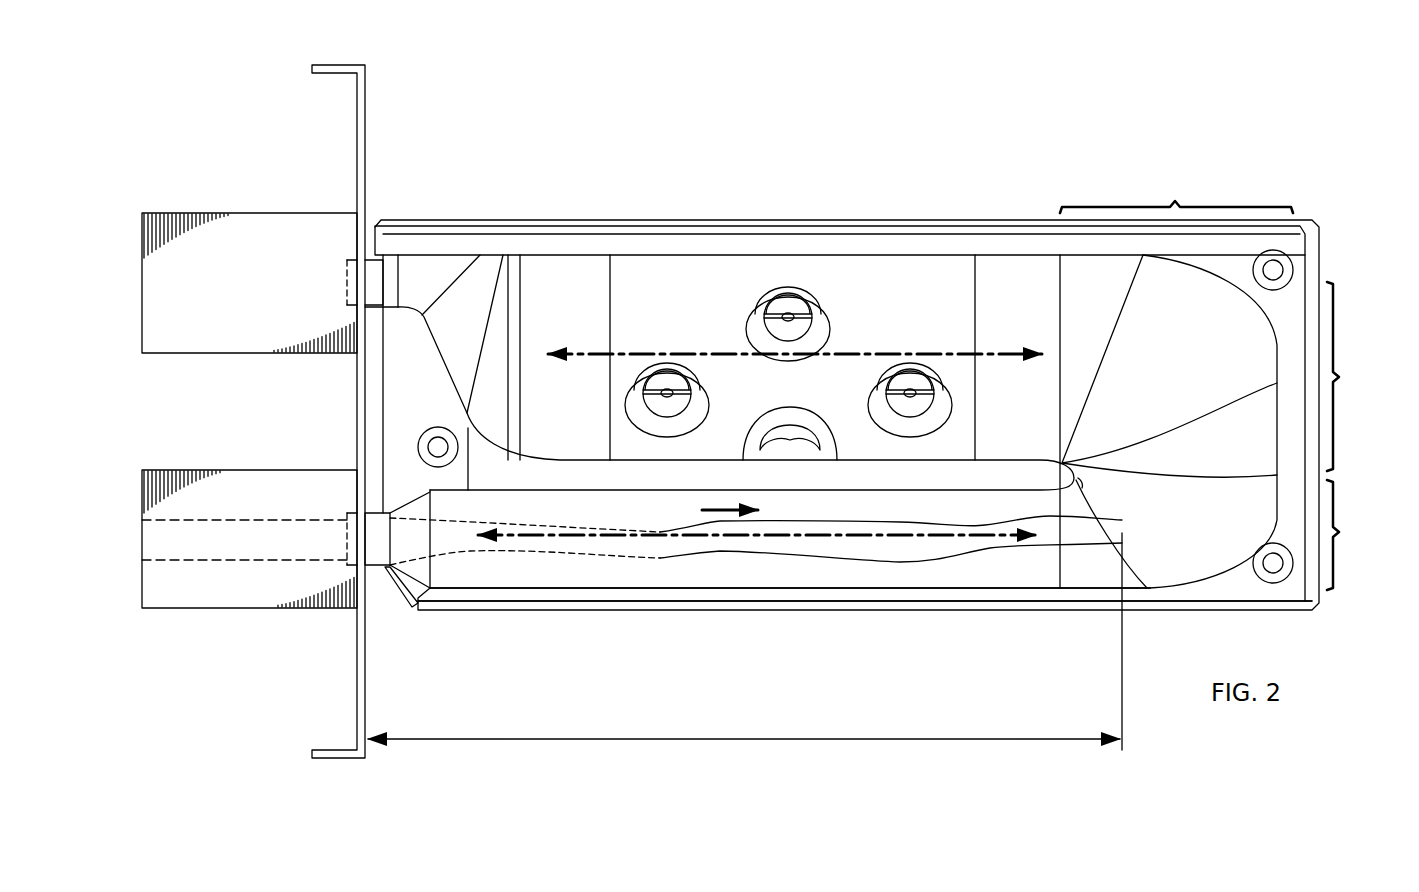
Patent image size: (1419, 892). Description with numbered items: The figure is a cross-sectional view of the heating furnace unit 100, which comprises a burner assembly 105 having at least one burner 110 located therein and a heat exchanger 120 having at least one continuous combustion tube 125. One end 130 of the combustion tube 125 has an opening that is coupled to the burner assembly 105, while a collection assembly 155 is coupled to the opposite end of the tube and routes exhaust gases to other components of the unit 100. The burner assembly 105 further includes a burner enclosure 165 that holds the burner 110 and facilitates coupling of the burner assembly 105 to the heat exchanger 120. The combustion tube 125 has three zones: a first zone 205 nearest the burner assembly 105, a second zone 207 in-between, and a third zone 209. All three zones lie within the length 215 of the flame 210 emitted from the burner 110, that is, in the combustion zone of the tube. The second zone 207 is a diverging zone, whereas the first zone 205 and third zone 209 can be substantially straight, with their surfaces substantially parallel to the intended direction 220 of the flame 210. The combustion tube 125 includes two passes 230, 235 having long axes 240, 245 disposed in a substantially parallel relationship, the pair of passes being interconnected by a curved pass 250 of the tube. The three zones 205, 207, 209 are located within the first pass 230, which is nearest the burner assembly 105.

The heating furnace unit 100 is at (555, 92).
The burner assembly 105 is at (215, 655).
The burner 110 is at (227, 558).
The heat exchanger 120 is at (990, 165).
The continuous combustion tube 125 is at (1025, 590).
The one end 130 is at (345, 627).
The collection assembly 155 is at (243, 213).
The burner enclosure 165 is at (207, 470).
The first zone 205 is at (375, 575).
The second zone 207 is at (410, 540).
The third zone 209 is at (435, 505).
The flame 210 is at (897, 562).
The flame length 215 is at (749, 741).
The intended direction of the flame 220 is at (700, 512).
The first pass 230 is at (1356, 535).
The second pass 235 is at (1356, 376).
The long axis of the first pass 240 is at (567, 539).
The long axis of the second pass 245 is at (891, 354).
The curved pass 250 is at (1176, 192).